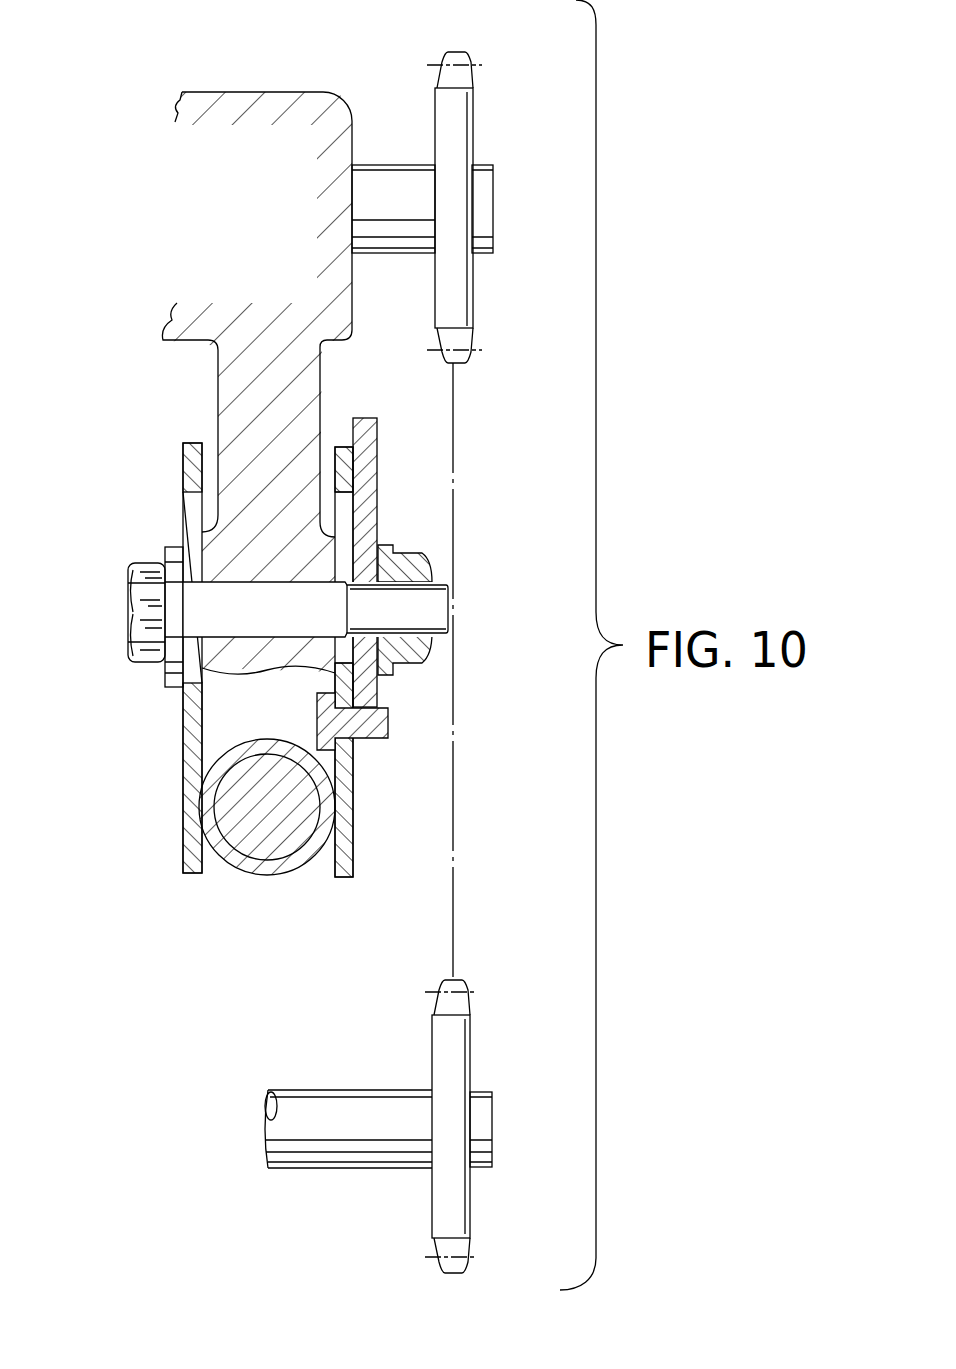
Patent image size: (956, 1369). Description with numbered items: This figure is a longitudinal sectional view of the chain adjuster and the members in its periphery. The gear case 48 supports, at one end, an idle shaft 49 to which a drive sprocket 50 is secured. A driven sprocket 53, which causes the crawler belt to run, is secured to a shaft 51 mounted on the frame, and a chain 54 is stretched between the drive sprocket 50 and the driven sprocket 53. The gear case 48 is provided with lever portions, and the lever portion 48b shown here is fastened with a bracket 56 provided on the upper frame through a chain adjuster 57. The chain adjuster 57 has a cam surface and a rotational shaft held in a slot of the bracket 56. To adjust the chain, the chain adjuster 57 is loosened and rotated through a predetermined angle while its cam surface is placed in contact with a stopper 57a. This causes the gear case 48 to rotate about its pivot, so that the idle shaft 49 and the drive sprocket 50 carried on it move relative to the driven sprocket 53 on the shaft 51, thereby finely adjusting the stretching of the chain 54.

The gear case 48 is at (223, 337).
The lever portion 48b is at (230, 400).
The idle shaft 49 is at (388, 185).
The drive sprocket 50 is at (455, 118).
The shaft 51 is at (348, 1157).
The driven sprocket 53 is at (455, 1053).
The chain 54 is at (453, 905).
The bracket 56 is at (188, 758).
The chain adjuster 57 is at (370, 462).
The stopper 57a is at (388, 730).